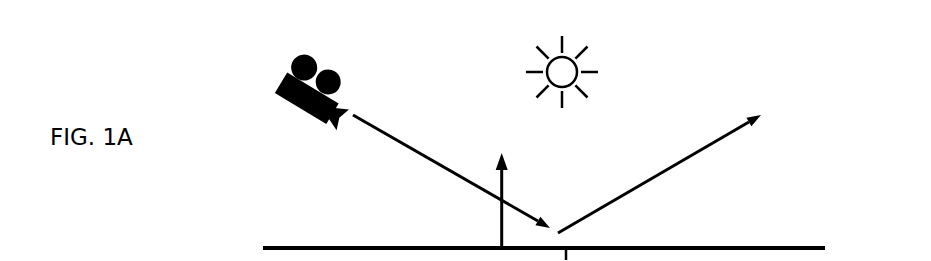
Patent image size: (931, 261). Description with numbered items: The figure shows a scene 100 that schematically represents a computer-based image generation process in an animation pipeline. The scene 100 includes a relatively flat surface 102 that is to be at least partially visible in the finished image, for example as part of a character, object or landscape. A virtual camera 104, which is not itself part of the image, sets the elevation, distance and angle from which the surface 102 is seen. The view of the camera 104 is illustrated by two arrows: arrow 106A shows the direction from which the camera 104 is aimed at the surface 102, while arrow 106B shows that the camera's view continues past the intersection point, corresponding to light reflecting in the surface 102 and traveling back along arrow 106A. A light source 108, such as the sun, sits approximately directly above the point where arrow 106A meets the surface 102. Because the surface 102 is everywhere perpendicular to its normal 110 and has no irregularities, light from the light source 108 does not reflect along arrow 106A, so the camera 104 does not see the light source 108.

The scene 100 is at (224, 52).
The surface 102 is at (346, 227).
The virtual camera 104 is at (297, 112).
The arrow 106A is at (396, 139).
The arrow 106B is at (680, 161).
The light source 108 is at (564, 46).
The normal 110 is at (503, 190).